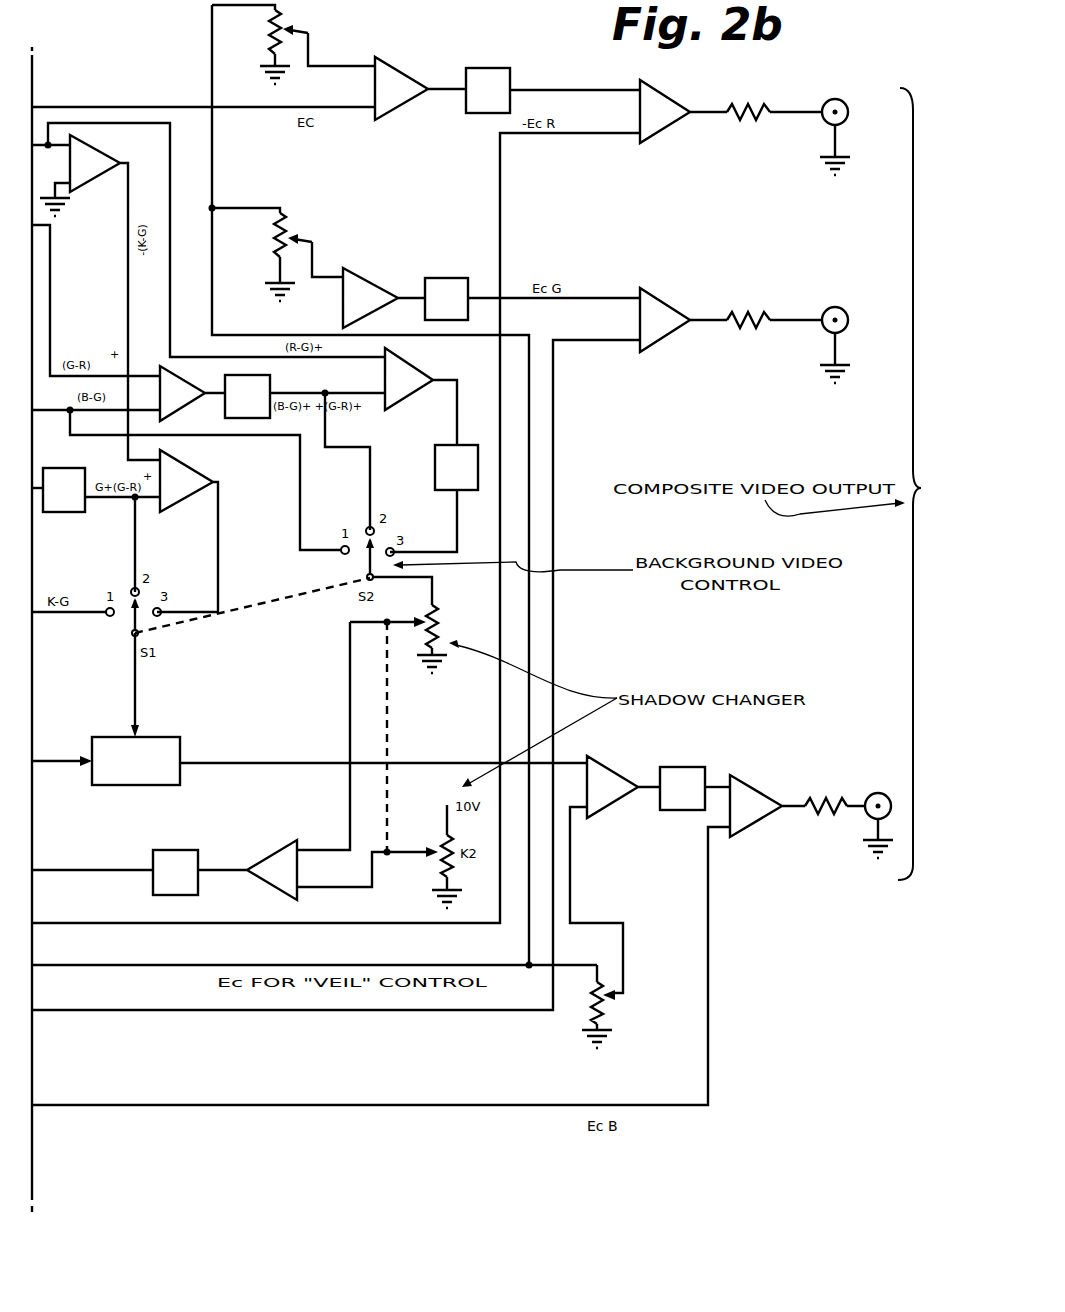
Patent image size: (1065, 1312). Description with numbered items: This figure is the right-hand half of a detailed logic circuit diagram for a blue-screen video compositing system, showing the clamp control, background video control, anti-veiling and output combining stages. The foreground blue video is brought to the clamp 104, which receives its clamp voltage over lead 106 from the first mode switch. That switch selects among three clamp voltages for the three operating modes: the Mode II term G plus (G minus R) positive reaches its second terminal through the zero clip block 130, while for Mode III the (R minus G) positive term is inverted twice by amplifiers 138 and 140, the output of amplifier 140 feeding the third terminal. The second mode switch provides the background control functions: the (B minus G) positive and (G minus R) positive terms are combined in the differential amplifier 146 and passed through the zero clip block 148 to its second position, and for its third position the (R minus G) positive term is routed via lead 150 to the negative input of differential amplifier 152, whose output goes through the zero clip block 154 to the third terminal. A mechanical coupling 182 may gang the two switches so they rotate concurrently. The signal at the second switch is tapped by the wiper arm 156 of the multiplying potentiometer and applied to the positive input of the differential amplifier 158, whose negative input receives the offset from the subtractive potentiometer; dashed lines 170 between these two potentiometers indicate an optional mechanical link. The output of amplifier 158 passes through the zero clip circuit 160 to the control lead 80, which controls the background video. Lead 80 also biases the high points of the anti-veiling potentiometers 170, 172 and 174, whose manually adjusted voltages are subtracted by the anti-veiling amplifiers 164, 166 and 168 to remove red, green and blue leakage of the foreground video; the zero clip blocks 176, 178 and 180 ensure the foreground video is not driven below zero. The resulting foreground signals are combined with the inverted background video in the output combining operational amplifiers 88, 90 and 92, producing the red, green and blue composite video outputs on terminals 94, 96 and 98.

The common control lead 80 is at (213, 140).
The output combining operational amplifier 88 is at (667, 133).
The output combining operational amplifier 90 is at (668, 300).
The output combining operational amplifier 92 is at (760, 830).
The composite video output terminal 94 is at (847, 107).
The composite video output terminal 96 is at (846, 315).
The composite video output terminal 98 is at (868, 818).
The clamp 104 is at (100, 785).
The lead 106 is at (137, 693).
The zero clip block 130 is at (80, 513).
The amplifier 138 is at (95, 143).
The amplifier 140 is at (188, 498).
The differential amplifier 146 is at (187, 406).
The zero clip block 148 is at (245, 418).
The lead 150 is at (172, 152).
The differential amplifier 152 is at (410, 361).
The zero clip block 154 is at (435, 469).
The wiper arm 156 is at (393, 628).
The differential amplifier 158 is at (268, 840).
The zero clip circuit 160 is at (150, 885).
The anti-veiling amplifier 164 is at (403, 72).
The anti-veiling amplifier 166 is at (377, 277).
The anti-veiling amplifier 168 is at (612, 803).
The potentiometer 170 is at (270, 37).
The potentiometer 172 is at (277, 240).
The potentiometer 174 is at (587, 1005).
The zero clip block 176 is at (473, 113).
The zero clip block 178 is at (448, 278).
The zero clip block 180 is at (692, 767).
The mechanical coupling 182 is at (267, 608).